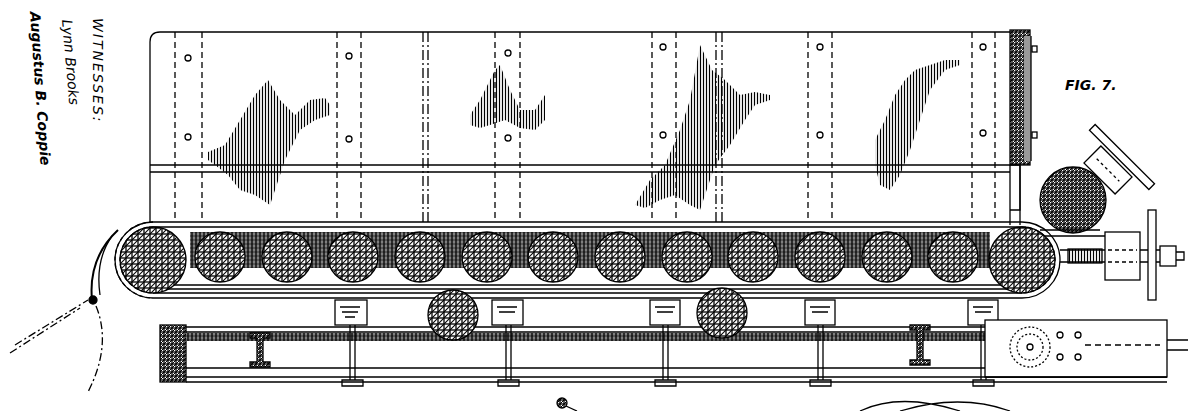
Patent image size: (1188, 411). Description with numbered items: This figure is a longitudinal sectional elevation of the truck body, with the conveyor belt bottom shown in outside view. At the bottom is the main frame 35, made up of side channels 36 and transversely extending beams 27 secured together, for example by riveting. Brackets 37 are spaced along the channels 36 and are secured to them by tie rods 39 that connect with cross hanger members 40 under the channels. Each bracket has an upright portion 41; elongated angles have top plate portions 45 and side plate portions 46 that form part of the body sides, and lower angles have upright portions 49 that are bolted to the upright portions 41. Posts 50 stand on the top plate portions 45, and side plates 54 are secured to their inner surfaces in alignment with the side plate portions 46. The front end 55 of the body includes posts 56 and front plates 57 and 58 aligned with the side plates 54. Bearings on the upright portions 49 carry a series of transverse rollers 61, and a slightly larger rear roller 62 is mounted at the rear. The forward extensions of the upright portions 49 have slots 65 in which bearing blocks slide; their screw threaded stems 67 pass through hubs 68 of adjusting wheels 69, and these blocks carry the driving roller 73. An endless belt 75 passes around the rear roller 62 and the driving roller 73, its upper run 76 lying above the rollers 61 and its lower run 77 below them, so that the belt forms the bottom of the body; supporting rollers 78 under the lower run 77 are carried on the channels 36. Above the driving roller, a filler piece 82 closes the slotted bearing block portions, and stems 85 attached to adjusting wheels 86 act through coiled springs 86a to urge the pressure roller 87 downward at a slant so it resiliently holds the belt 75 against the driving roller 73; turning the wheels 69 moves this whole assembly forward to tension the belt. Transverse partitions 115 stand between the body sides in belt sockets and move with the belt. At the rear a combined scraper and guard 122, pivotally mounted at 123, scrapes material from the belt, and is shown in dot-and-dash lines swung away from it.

The transversely extending beam 27 is at (258, 352).
The main frame 35 is at (298, 372).
The side channel 36 is at (784, 348).
The bracket 37 is at (523, 313).
The tie rod 39 is at (508, 355).
The cross hanger member 40 is at (672, 384).
The upright portion 41 is at (520, 190).
The top plate portion 45 is at (458, 168).
The side plate portion 46 is at (530, 197).
The upright portion 49 is at (393, 222).
The post 50 is at (361, 116).
The side plate 54 is at (580, 127).
The front end 55 is at (1018, 30).
The post 56 is at (1033, 105).
The front plate 57 is at (1010, 95).
The front plate 58 is at (1010, 192).
The roller 61 is at (240, 283).
The rear roller 62 is at (145, 252).
The slot 65 is at (1072, 270).
The screw threaded stem 67 is at (1120, 285).
The hub 68 is at (1172, 270).
The adjusting wheel 69 is at (1144, 262).
The driving roller 73 is at (985, 262).
The belt 75 is at (405, 222).
The upper run 76 is at (879, 203).
The lower run 77 is at (268, 296).
The supporting roller 78 is at (458, 330).
The filler piece 82 is at (1082, 140).
The stem 85 is at (1128, 210).
The adjusting wheel 86 is at (1110, 135).
The coiled spring 86a is at (1118, 210).
The pressure roller 87 is at (1055, 178).
The transverse partition 115 is at (428, 85).
The combined scraper and guard 122 is at (105, 252).
The pivotal mounting 123 is at (98, 304).